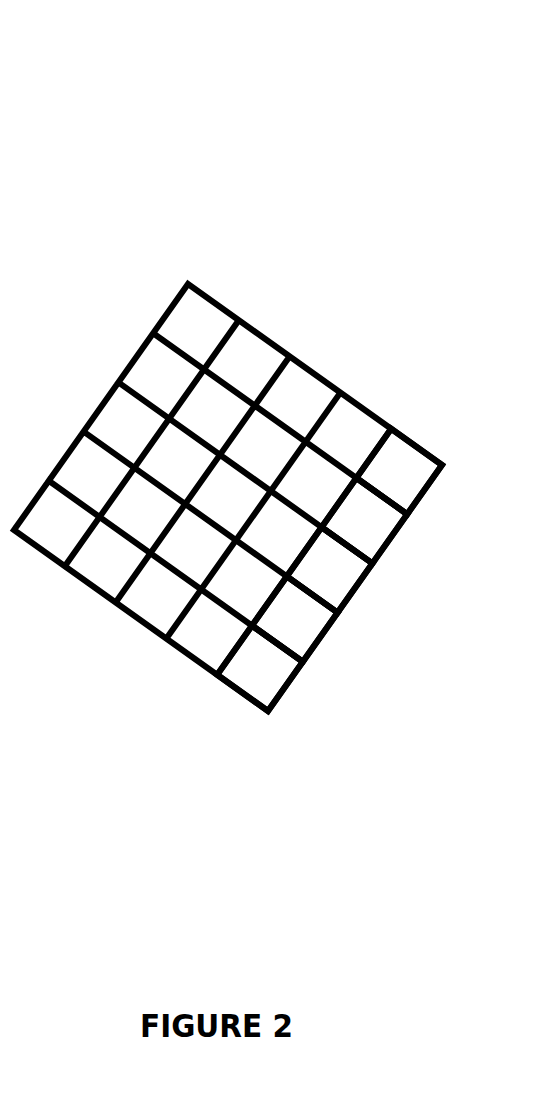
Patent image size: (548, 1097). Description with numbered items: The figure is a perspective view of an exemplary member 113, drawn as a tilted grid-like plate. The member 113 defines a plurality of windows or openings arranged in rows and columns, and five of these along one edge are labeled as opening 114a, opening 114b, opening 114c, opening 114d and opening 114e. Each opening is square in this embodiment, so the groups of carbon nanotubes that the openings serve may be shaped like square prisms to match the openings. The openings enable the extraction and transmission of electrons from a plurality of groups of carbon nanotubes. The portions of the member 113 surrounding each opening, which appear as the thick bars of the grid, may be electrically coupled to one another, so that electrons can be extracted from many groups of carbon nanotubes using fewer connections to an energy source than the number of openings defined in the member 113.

The member 113 is at (236, 40).
The opening 114a is at (270, 676).
The opening 114b is at (306, 627).
The opening 114c is at (340, 577).
The opening 114d is at (374, 530).
The opening 114e is at (403, 480).